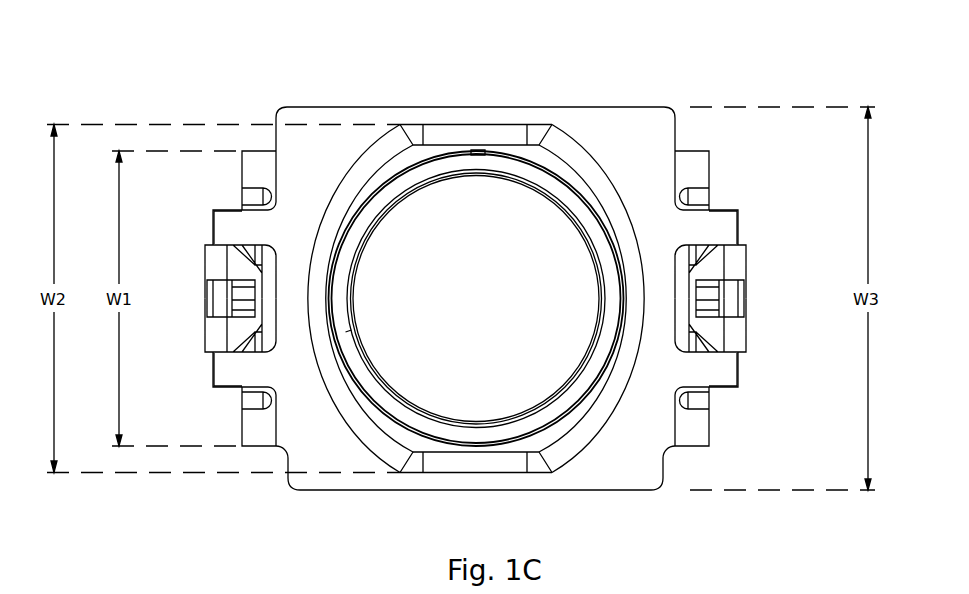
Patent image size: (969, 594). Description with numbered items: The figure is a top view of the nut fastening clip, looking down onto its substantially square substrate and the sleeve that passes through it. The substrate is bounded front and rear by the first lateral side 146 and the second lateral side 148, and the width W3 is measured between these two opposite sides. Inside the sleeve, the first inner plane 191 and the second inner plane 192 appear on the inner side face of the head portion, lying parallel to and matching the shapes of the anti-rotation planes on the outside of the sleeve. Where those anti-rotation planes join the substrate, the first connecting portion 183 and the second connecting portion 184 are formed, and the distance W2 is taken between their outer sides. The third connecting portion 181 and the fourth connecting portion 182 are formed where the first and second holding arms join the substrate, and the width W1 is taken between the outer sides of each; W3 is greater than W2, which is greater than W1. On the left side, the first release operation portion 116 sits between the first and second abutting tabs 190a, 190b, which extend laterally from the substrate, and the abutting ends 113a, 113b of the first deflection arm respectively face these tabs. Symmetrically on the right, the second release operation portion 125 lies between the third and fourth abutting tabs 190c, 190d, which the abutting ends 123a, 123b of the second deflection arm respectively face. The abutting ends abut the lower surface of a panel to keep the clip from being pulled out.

The abutting end 113a is at (212, 228).
The abutting end 113b is at (210, 363).
The first release operation portion 116 is at (243, 300).
The abutting end 123a is at (742, 227).
The abutting end 123b is at (740, 372).
The second release operation portion 125 is at (708, 300).
The first lateral side 146 is at (620, 470).
The second lateral side 148 is at (620, 118).
The third connecting portion 181 is at (262, 165).
The fourth connecting portion 182 is at (695, 163).
The first connecting portion 183 is at (442, 460).
The second connecting portion 184 is at (443, 133).
The first abutting tab 190a is at (227, 223).
The second abutting tab 190b is at (227, 367).
The third abutting tab 190c is at (722, 225).
The fourth abutting tab 190d is at (723, 373).
The first inner plane 191 is at (480, 450).
The second inner plane 192 is at (485, 146).